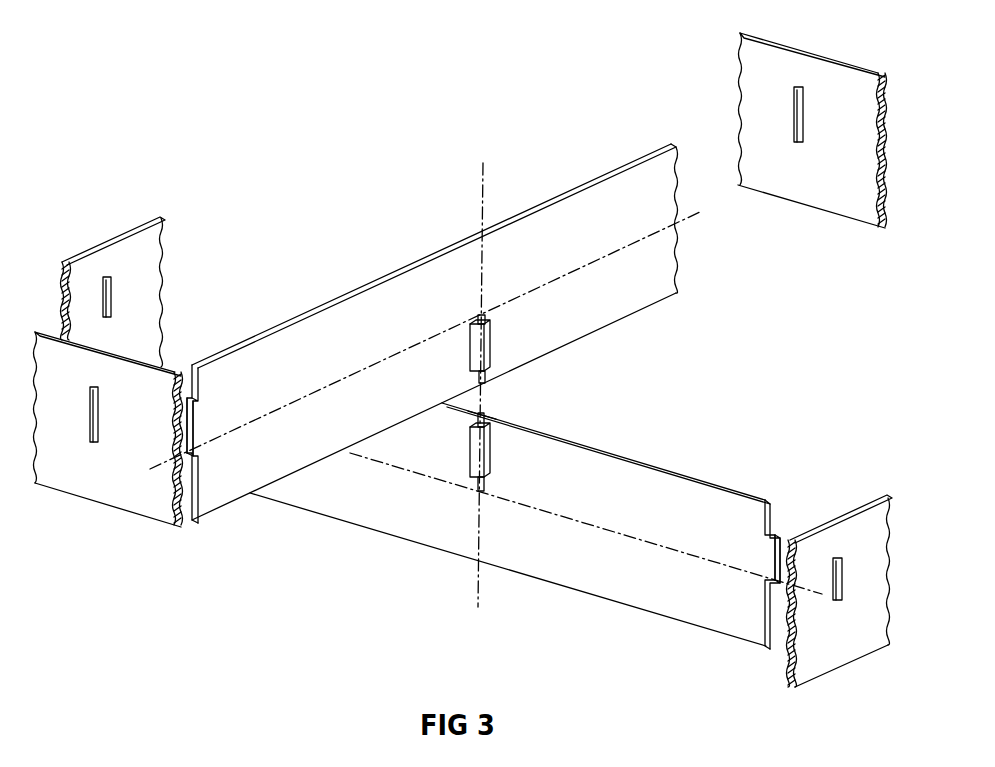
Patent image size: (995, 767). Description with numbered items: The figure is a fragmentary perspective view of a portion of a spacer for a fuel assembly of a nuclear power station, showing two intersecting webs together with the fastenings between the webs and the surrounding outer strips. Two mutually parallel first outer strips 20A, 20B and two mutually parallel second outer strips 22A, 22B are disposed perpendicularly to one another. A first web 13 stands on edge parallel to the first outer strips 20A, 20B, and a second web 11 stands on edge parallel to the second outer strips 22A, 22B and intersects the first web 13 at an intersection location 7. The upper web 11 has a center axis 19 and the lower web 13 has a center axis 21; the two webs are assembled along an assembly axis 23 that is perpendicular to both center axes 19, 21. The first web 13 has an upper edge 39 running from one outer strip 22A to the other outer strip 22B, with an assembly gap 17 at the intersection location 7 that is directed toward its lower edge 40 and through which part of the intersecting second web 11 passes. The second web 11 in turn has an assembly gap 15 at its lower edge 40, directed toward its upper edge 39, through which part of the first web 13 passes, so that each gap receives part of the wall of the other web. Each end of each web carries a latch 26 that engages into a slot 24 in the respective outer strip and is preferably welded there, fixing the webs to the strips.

The intersection location 7 is at (480, 418).
The upper web 11 is at (560, 198).
The lower web 13 is at (627, 467).
The assembly gap 15 is at (483, 312).
The assembly gap 17 is at (490, 465).
The center axis 19 is at (560, 278).
The center axis 21 is at (563, 520).
The assembly axis 23 is at (483, 180).
The slot 24 is at (107, 293).
The latch 26 is at (187, 430).
The upper edge 39 is at (390, 273).
The lower edge 40 is at (582, 338).
The first outer strip 20A is at (110, 477).
The first outer strip 20B is at (815, 187).
The second outer strip 22A is at (143, 247).
The second outer strip 22B is at (820, 647).